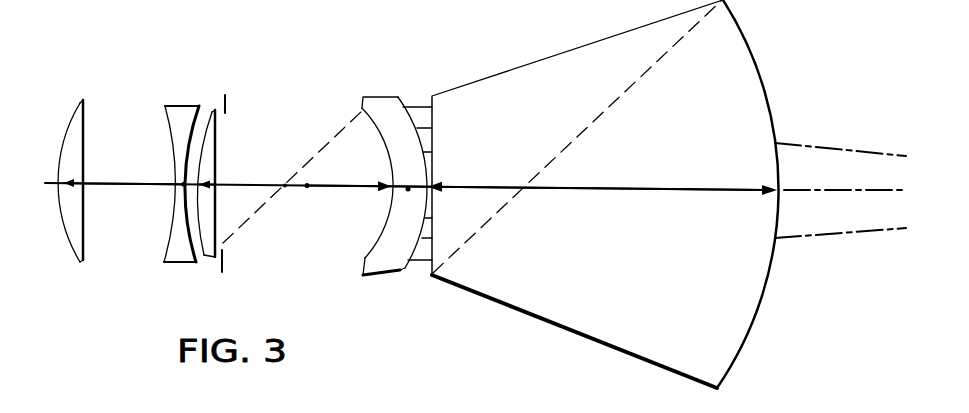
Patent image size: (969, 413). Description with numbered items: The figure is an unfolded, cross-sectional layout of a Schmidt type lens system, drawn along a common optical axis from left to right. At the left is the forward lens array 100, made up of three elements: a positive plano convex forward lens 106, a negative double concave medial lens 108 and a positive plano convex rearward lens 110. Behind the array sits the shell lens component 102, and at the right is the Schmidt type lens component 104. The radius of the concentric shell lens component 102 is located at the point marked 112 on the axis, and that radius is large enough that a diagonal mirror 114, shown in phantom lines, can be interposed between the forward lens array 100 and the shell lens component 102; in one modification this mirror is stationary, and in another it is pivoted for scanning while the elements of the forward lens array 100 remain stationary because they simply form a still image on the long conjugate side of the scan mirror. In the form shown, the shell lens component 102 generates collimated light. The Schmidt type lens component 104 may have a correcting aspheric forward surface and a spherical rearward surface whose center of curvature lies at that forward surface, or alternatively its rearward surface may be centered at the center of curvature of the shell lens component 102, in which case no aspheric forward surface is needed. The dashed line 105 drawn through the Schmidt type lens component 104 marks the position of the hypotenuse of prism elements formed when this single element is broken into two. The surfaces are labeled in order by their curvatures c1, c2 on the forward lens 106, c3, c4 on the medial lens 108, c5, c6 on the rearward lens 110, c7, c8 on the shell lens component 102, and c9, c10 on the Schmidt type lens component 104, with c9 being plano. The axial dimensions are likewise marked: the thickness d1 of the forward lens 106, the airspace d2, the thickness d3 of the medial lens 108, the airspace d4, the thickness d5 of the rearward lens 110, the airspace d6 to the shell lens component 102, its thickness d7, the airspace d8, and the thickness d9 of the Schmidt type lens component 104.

The forward lens array 100 is at (187, 78).
The shell lens component 102 is at (387, 78).
The Schmidt type lens component 104 is at (557, 46).
The dashed line 105 is at (605, 108).
The positive plano convex forward lens 106 is at (80, 110).
The negative double concave medial lens 108 is at (166, 122).
The positive plano convex rearward lens 110 is at (218, 138).
The radius of concentric shell 112 is at (283, 189).
The diagonal mirror 114 is at (314, 143).
The thickness d1 is at (74, 180).
The airspace spacing d2 is at (127, 183).
The thickness d3 is at (182, 213).
The airspace spacing d4 is at (186, 183).
The thickness d5 is at (210, 184).
The airspace spacing d6 is at (309, 185).
The thickness d7 is at (408, 190).
The airspace spacing d8 is at (440, 184).
The thickness d9 is at (598, 188).
The curvature c1 is at (62, 228).
The curvature c2 is at (86, 255).
The curvature c3 is at (164, 244).
The curvature c4 is at (203, 258).
The curvature c5 is at (200, 261).
The curvature c6 is at (217, 212).
The curvature c7 is at (372, 246).
The curvature c8 is at (389, 266).
The curvature c9 is at (440, 259).
The curvature c10 is at (735, 362).